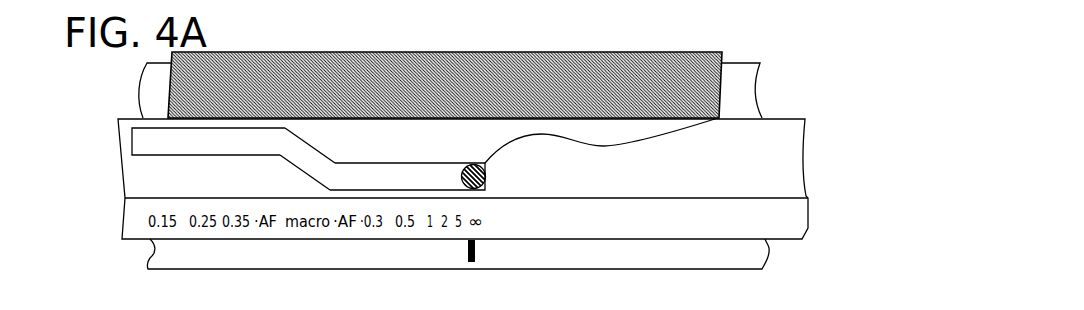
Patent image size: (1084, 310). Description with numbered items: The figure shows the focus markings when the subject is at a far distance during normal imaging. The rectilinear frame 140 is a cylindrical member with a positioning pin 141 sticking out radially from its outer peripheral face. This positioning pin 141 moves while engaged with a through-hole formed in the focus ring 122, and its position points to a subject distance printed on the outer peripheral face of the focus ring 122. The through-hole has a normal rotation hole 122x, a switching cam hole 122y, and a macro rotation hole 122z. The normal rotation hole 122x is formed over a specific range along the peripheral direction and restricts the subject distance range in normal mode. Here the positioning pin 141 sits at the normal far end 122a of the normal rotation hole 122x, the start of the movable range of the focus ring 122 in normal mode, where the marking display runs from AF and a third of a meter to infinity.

The focus ring 122 is at (755, 165).
The macro rotation hole 122z is at (182, 143).
The switching cam hole 122y is at (303, 157).
The normal rotation hole 122x is at (393, 175).
The normal far end 122a is at (488, 190).
The rectilinear frame 140 is at (683, 83).
The positioning pin 141 is at (716, 119).